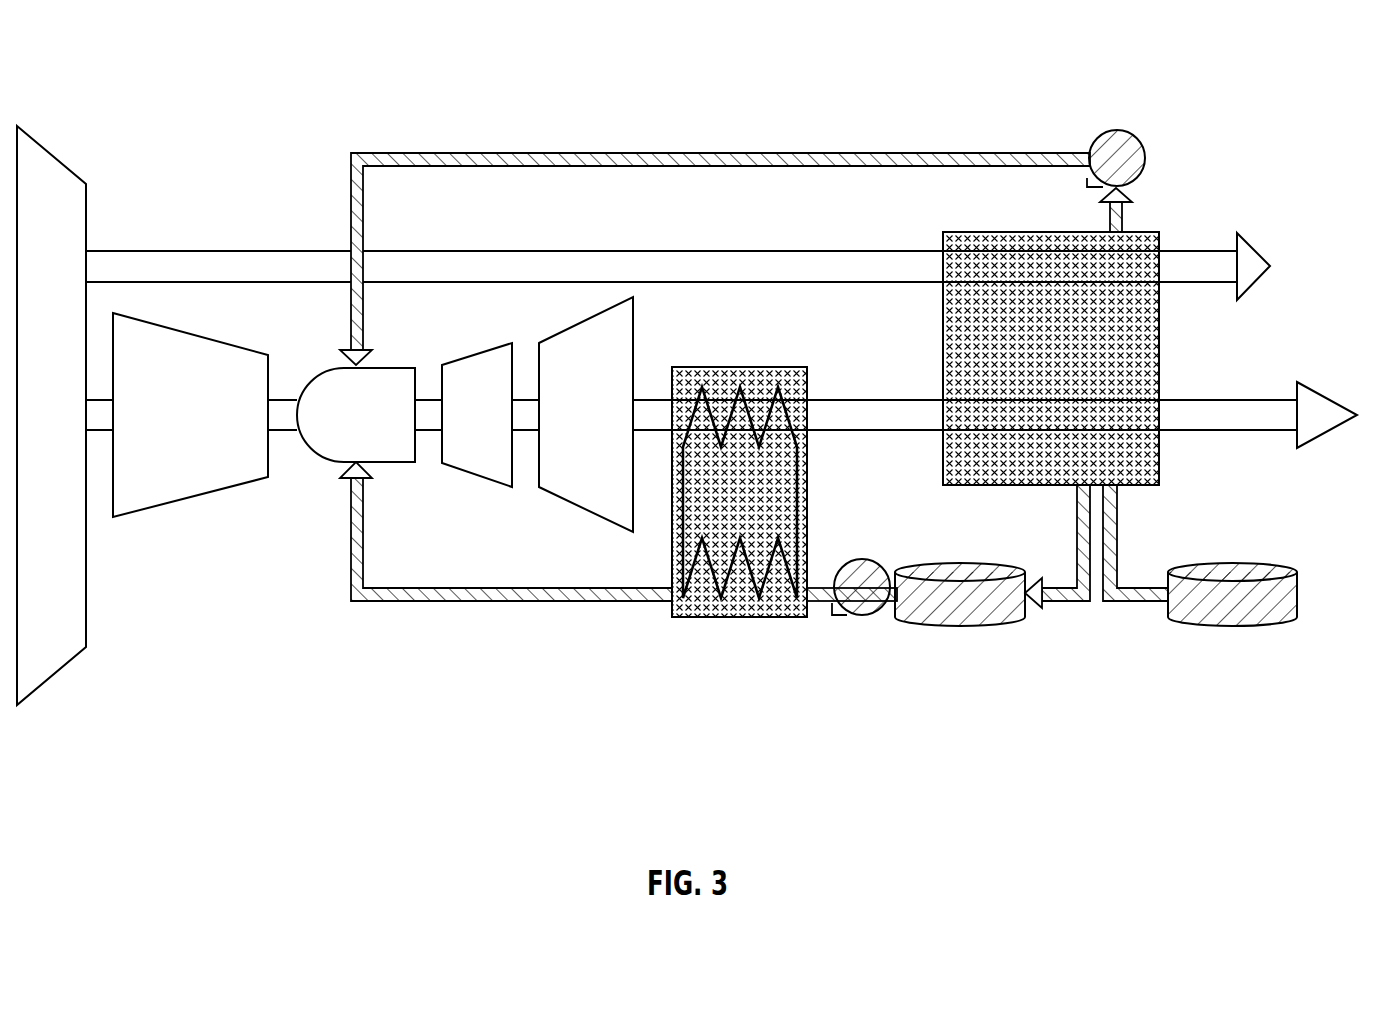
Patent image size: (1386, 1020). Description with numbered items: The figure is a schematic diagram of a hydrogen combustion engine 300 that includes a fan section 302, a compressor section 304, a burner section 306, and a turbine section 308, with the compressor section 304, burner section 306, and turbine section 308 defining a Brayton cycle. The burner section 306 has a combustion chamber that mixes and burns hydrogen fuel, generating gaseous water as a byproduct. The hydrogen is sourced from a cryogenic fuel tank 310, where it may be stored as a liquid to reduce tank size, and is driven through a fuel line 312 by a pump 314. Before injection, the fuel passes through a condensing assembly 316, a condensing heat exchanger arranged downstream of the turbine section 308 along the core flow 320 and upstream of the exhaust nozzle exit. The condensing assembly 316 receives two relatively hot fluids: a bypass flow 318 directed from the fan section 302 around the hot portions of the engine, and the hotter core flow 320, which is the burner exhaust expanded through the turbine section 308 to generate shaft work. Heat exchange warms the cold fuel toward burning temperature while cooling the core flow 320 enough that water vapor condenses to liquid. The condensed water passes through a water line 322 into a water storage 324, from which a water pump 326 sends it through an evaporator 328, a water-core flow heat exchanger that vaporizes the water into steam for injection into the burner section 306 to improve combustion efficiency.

The hydrogen combustion engine 300 is at (1296, 90).
The fan section 302 is at (58, 687).
The compressor section 304 is at (200, 507).
The burner section 306 is at (324, 466).
The turbine section 308 is at (491, 491).
The cryogenic fuel tank 310 is at (1232, 624).
The fuel line 312 is at (740, 153).
The pump 314 is at (1117, 130).
The condensing assembly 316 is at (1162, 453).
The bypass flow 318 is at (686, 251).
The core flow 320 is at (868, 400).
The water line 322 is at (512, 603).
The water storage 324 is at (960, 623).
The water pump 326 is at (857, 618).
The evaporator 328 is at (738, 620).